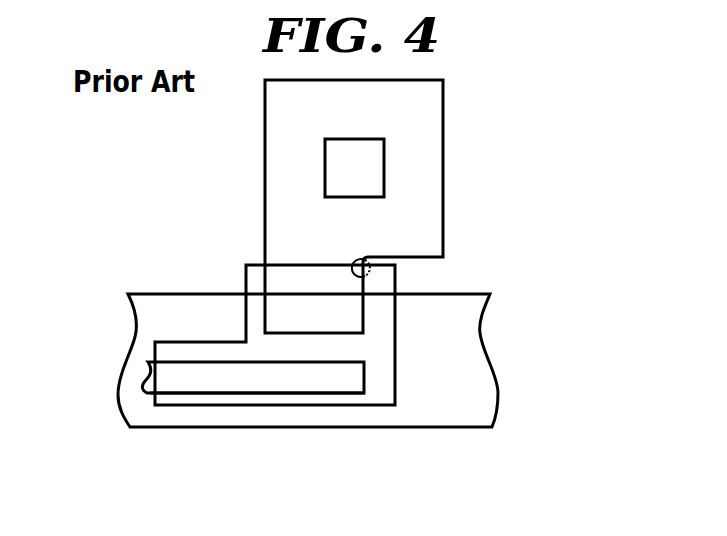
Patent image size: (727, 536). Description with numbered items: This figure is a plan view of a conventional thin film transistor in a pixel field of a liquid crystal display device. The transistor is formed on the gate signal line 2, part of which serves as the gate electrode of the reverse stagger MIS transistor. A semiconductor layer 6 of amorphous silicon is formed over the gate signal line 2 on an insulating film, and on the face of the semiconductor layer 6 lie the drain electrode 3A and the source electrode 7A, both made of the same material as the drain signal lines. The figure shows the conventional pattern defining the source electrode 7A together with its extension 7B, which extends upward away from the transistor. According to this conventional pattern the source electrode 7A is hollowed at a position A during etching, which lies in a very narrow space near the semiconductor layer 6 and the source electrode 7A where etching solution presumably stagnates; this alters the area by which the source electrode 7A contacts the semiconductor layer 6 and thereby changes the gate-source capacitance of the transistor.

The gate signal line 2 is at (117, 394).
The drain electrode 3A is at (263, 393).
The semiconductor layer 6 is at (395, 362).
The source electrode 7A is at (395, 313).
The extension 7B is at (443, 180).
The position A is at (351, 272).